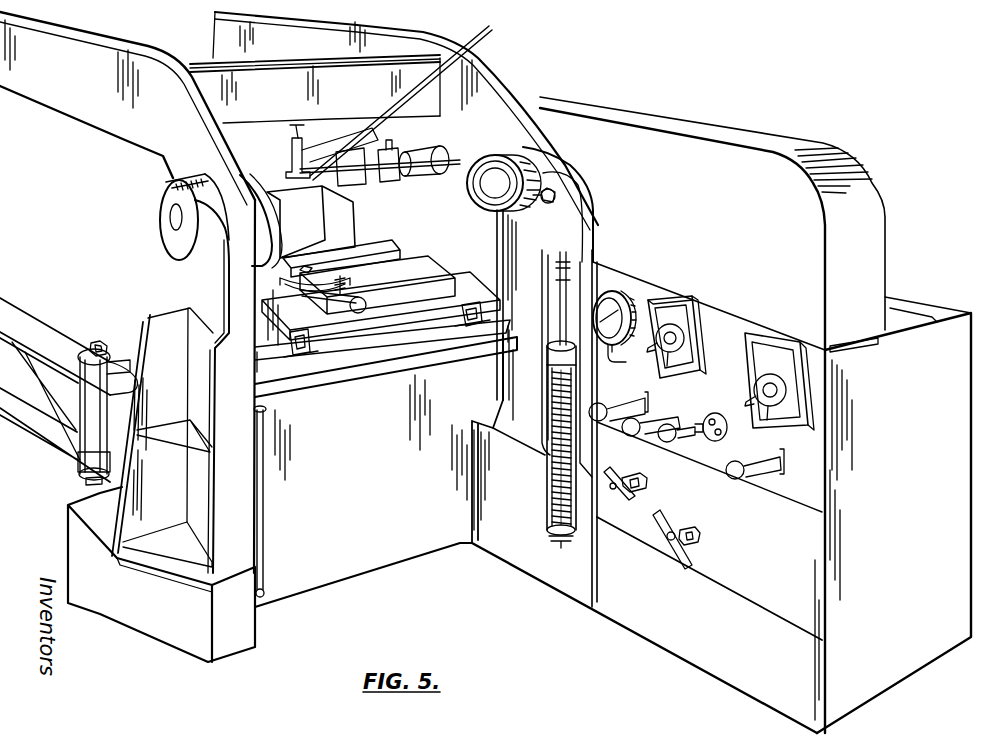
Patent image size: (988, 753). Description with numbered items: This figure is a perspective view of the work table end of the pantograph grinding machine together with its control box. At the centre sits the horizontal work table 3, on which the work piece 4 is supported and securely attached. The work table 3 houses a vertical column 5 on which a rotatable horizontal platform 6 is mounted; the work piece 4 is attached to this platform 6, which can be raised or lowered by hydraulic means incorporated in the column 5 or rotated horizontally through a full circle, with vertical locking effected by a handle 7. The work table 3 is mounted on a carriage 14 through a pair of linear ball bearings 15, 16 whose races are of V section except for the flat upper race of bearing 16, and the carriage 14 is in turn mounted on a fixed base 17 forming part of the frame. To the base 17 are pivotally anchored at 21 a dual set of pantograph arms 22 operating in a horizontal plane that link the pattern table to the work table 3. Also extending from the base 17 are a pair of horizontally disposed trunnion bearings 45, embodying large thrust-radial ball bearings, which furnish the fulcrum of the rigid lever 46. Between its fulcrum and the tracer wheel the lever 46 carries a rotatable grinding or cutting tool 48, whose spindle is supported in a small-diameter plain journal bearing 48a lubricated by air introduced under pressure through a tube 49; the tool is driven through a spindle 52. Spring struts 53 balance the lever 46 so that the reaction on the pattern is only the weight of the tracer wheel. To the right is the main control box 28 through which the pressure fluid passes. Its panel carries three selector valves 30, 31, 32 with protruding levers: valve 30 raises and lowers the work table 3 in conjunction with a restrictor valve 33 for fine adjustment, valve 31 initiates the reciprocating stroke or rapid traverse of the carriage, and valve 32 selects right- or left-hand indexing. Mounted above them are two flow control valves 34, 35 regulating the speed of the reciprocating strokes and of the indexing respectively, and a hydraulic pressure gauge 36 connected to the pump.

The work table 3 is at (420, 292).
The work piece 4 is at (340, 226).
The vertical column 5 is at (412, 270).
The rotatable horizontal platform 6 is at (380, 252).
The handle 7 is at (357, 303).
The carriage 14 is at (386, 350).
The linear ball bearing 15 is at (303, 357).
The linear ball bearing 16 is at (478, 312).
The fixed base 17 is at (405, 528).
The pivot anchorage 21 is at (103, 343).
The pantograph arms 22 is at (33, 345).
The main control box 28 is at (800, 566).
The selector valve 30 is at (640, 410).
The selector valve 31 is at (680, 420).
The selector valve 32 is at (742, 468).
The restrictor valve 33 is at (702, 532).
The flow control valve 34 is at (694, 320).
The flow control valve 35 is at (762, 350).
The hydraulic pressure gauge 36 is at (622, 292).
The trunnion bearings 45 is at (162, 222).
The lever 46 is at (62, 98).
The grinding or cutting tool 48 is at (290, 168).
The bearing 48a is at (360, 150).
The tube 49 is at (490, 30).
The spindle 52 is at (352, 160).
The spring struts 53 is at (543, 530).